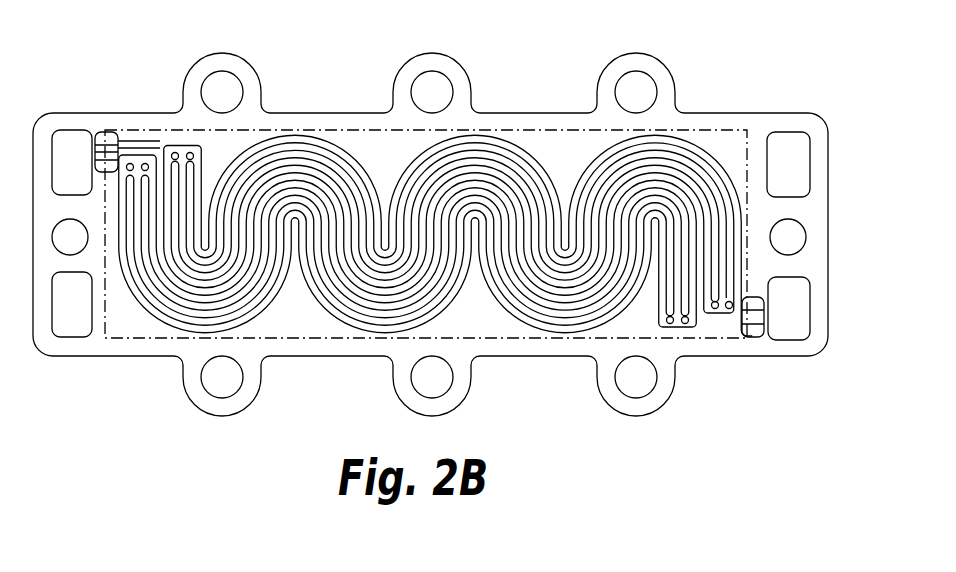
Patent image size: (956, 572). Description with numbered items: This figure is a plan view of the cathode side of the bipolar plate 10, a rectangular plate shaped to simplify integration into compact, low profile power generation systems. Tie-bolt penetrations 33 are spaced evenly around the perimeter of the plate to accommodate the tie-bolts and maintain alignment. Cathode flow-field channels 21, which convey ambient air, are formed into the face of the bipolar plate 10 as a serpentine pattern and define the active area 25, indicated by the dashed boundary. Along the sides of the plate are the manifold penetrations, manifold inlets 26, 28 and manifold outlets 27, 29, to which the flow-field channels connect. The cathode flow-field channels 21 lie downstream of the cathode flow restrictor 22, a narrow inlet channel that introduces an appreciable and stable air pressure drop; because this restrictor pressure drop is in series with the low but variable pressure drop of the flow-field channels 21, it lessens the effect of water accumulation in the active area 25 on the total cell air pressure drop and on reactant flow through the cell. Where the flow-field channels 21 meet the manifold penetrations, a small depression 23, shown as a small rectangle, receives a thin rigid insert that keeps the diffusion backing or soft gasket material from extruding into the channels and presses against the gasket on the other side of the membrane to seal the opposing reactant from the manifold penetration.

The bipolar plate 10 is at (822, 357).
The cathode flow-field channels 21 is at (490, 320).
The cathode flow restrictor 22 is at (757, 337).
The small depression 23 is at (113, 130).
The active area 25 is at (375, 128).
The manifold inlet 26 is at (776, 315).
The manifold outlet 27 is at (59, 172).
The manifold inlet 28 is at (775, 174).
The manifold outlet 29 is at (59, 315).
The tie-bolt penetration 33 is at (437, 80).